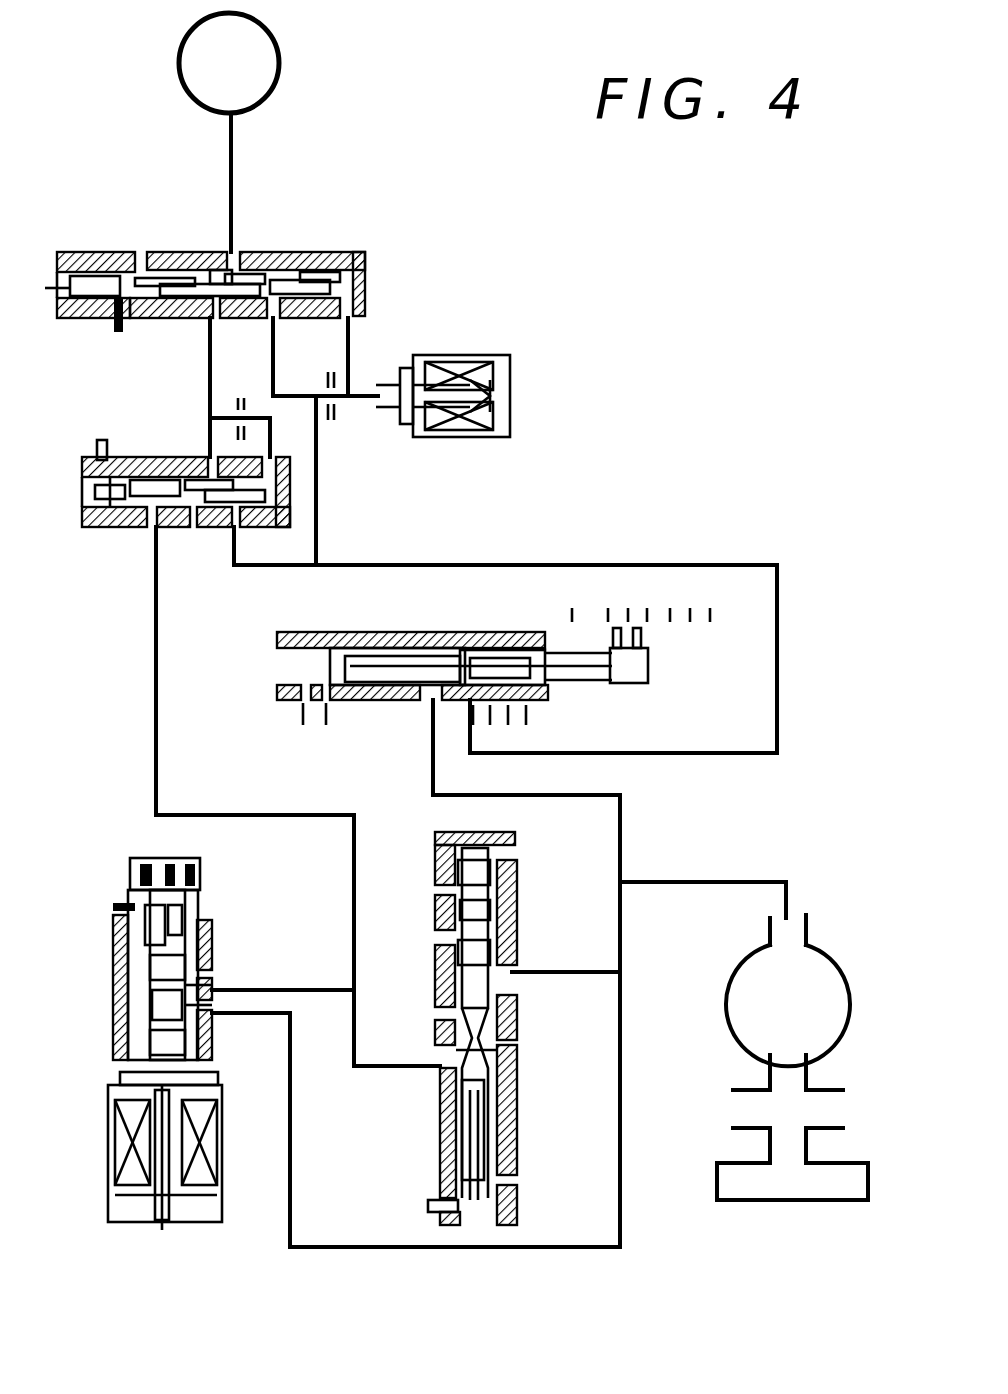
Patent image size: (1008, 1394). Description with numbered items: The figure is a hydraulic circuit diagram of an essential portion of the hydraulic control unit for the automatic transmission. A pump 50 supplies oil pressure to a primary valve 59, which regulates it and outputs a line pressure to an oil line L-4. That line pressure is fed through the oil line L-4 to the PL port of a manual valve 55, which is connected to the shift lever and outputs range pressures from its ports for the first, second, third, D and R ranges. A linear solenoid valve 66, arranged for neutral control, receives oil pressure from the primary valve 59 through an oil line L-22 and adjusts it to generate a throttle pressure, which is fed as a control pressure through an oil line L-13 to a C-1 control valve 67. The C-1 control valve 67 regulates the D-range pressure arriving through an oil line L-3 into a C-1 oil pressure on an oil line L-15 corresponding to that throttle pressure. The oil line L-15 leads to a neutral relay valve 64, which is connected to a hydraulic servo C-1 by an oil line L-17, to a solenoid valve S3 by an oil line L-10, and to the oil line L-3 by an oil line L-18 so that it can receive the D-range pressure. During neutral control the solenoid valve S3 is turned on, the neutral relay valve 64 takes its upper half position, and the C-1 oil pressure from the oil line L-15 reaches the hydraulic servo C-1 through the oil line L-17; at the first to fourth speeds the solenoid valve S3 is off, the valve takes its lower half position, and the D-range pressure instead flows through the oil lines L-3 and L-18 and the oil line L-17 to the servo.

The hydraulic servo C-1 is at (229, 63).
The oil line L-17 is at (231, 160).
The neutral relay valve 64 is at (345, 247).
The oil line L-10 is at (350, 352).
The solenoid valve S3 is at (453, 371).
The oil line L-15 is at (208, 358).
The C-1 control valve 67 is at (70, 468).
The oil line L-18 is at (318, 522).
The oil line L-3 is at (640, 557).
The manual valve 55 is at (420, 630).
The oil line L-4 is at (622, 802).
The oil line L-13 is at (158, 768).
The oil line L-22 is at (292, 1168).
The linear solenoid valve 66 is at (210, 905).
The primary valve 59 is at (512, 882).
The pump 50 is at (805, 905).